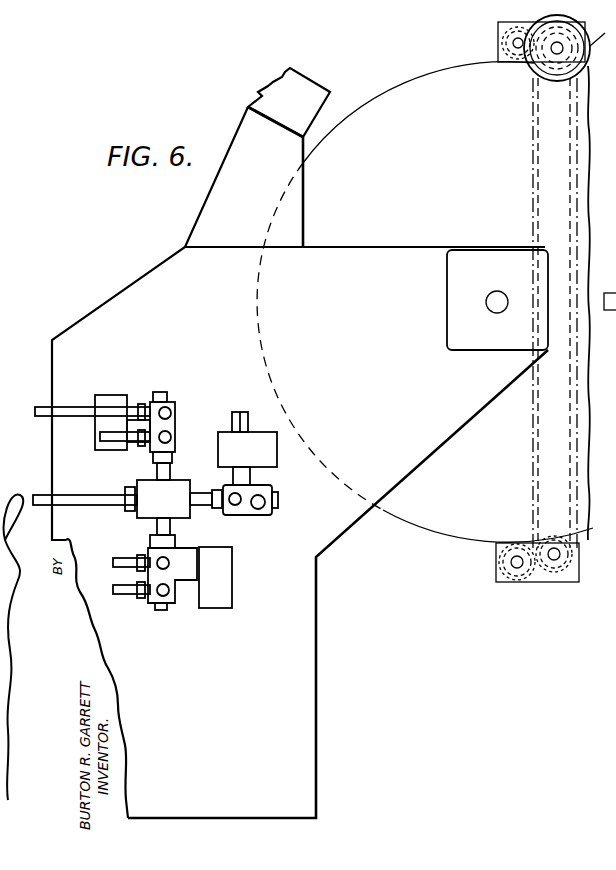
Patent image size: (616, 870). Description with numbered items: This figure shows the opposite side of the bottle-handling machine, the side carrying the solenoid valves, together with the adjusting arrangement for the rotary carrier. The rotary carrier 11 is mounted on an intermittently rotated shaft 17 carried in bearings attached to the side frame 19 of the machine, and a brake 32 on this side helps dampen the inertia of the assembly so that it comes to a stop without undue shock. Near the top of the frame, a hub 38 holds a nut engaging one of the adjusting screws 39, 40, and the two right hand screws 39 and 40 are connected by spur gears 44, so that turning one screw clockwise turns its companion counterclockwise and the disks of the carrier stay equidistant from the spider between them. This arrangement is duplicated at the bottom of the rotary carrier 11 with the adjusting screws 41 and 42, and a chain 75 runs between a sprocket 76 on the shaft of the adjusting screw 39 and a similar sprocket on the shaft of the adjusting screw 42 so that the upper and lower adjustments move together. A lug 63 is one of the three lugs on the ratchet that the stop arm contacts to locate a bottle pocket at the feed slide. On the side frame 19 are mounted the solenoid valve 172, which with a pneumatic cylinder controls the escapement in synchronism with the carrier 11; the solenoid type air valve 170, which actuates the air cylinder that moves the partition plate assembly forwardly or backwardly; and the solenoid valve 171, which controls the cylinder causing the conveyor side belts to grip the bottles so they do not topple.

The rotary carrier 11 is at (412, 56).
The shaft 17 is at (497, 291).
The side frame 19 is at (113, 306).
The brake 32 is at (478, 338).
The hub 38 is at (513, 50).
The adjusting screw 39 is at (556, 52).
The adjusting screw 40 is at (603, 42).
The adjusting screw 41 is at (515, 566).
The adjusting screw 42 is at (560, 558).
The spur gear 44 is at (497, 48).
The lug 63 is at (607, 312).
The chain 75 is at (530, 204).
The sprocket 76 is at (602, 303).
The solenoid type air valve 170 is at (224, 600).
The solenoid valve 171 is at (268, 447).
The solenoid valve 172 is at (121, 395).